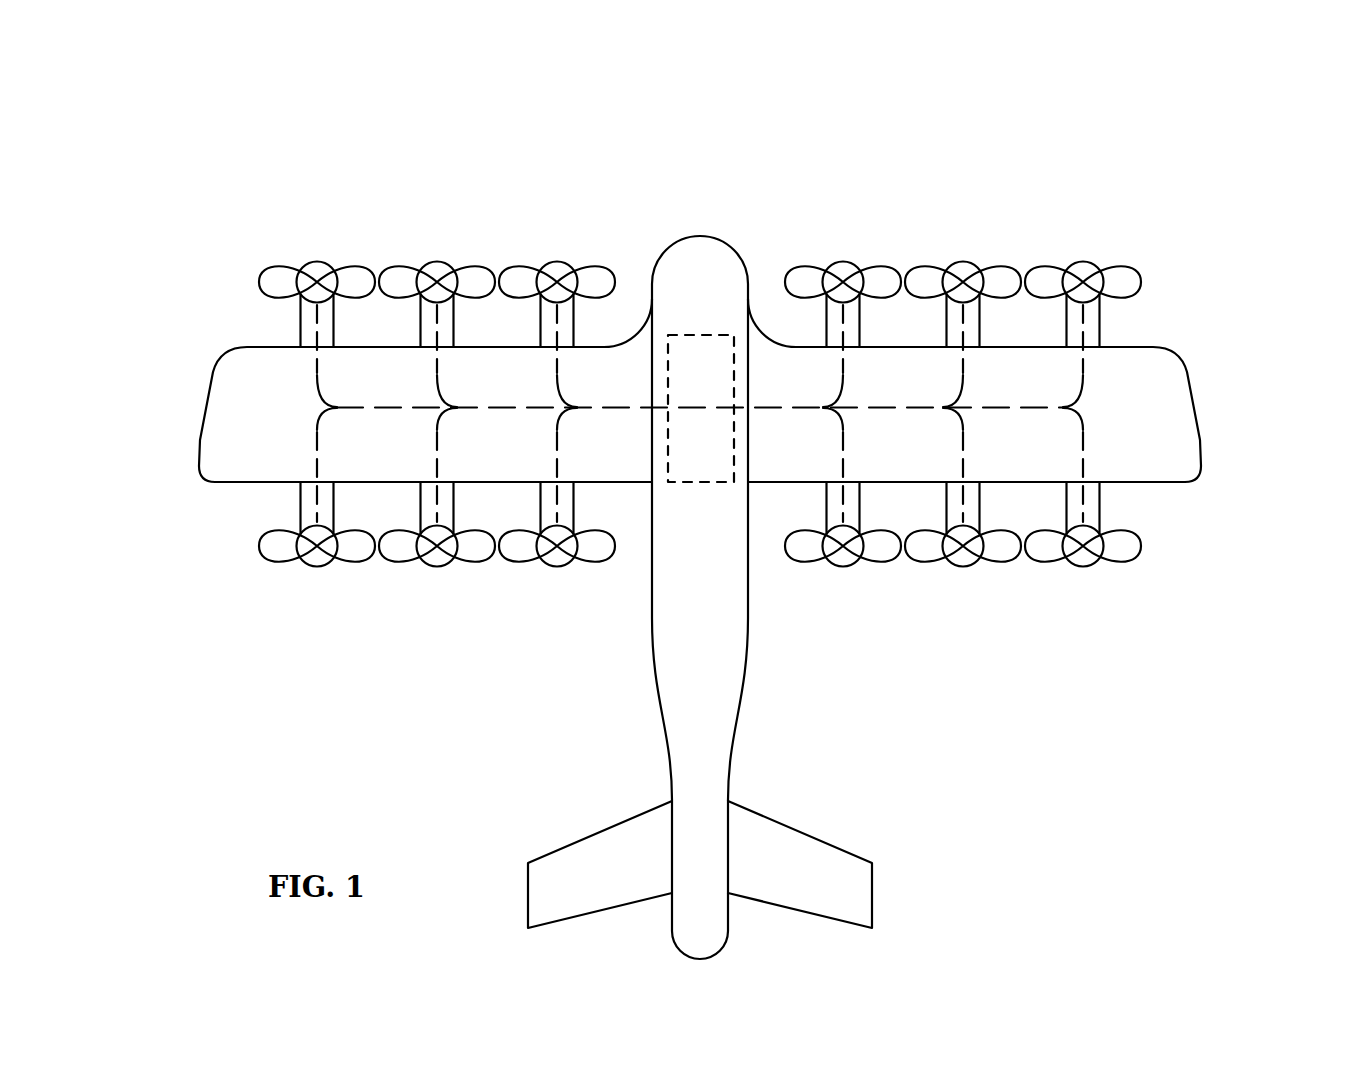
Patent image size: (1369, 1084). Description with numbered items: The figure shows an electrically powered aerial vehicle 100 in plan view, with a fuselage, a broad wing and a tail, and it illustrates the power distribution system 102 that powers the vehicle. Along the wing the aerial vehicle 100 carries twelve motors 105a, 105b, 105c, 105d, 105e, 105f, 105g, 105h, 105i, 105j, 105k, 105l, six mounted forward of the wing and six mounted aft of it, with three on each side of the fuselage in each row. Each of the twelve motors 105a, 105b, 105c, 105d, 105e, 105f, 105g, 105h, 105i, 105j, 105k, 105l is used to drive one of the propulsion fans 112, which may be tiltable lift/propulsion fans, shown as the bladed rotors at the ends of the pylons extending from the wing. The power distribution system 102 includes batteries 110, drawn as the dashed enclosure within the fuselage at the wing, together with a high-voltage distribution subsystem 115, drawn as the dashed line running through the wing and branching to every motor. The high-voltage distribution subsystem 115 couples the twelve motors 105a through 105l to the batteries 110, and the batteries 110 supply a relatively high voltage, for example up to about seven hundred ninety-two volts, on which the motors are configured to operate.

The electrically powered aerial vehicle 100 is at (240, 120).
The power distribution system 102 is at (625, 265).
The motor 105a is at (317, 262).
The motor 105b is at (432, 262).
The motor 105c is at (548, 262).
The motor 105d is at (843, 265).
The motor 105e is at (970, 260).
The motor 105f is at (1083, 265).
The motor 105g is at (317, 567).
The motor 105h is at (432, 567).
The motor 105i is at (554, 568).
The motor 105j is at (848, 566).
The motor 105k is at (967, 566).
The motor 105l is at (1085, 566).
The batteries 110 is at (703, 335).
The propulsion fans 112 is at (262, 270).
The high-voltage distribution subsystem 115 is at (781, 410).